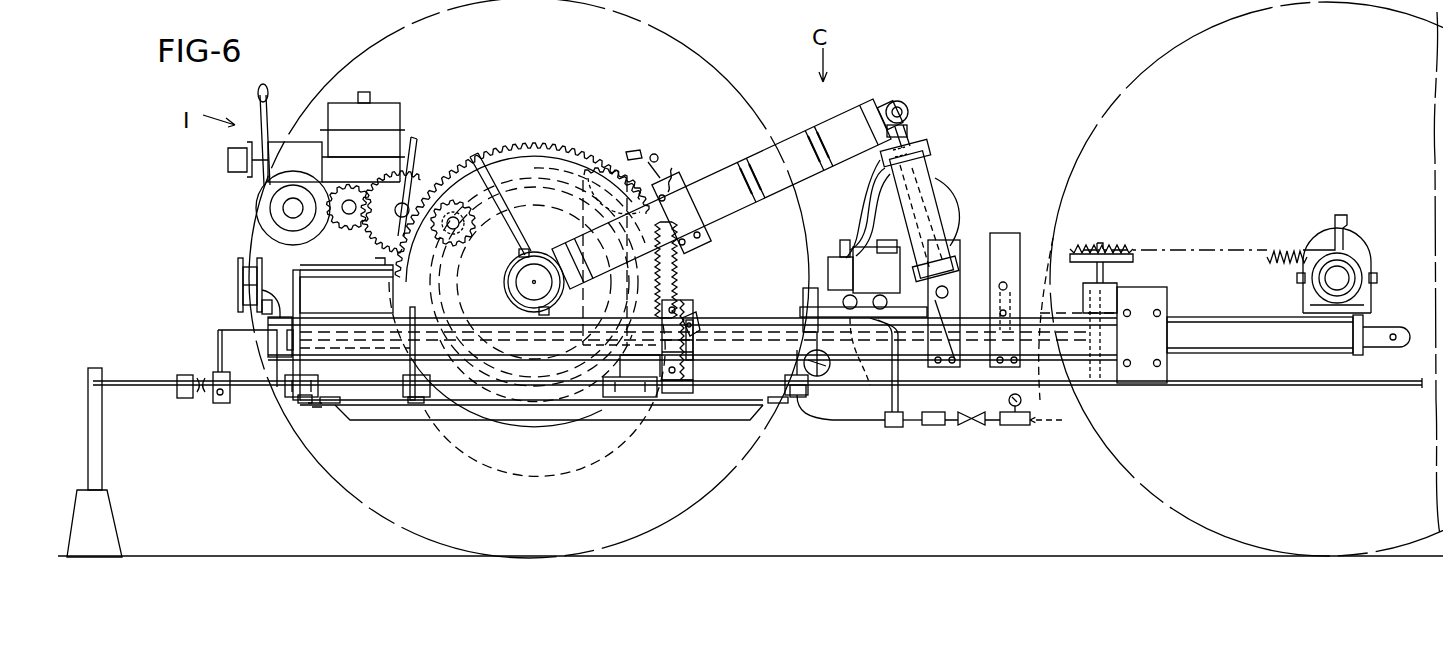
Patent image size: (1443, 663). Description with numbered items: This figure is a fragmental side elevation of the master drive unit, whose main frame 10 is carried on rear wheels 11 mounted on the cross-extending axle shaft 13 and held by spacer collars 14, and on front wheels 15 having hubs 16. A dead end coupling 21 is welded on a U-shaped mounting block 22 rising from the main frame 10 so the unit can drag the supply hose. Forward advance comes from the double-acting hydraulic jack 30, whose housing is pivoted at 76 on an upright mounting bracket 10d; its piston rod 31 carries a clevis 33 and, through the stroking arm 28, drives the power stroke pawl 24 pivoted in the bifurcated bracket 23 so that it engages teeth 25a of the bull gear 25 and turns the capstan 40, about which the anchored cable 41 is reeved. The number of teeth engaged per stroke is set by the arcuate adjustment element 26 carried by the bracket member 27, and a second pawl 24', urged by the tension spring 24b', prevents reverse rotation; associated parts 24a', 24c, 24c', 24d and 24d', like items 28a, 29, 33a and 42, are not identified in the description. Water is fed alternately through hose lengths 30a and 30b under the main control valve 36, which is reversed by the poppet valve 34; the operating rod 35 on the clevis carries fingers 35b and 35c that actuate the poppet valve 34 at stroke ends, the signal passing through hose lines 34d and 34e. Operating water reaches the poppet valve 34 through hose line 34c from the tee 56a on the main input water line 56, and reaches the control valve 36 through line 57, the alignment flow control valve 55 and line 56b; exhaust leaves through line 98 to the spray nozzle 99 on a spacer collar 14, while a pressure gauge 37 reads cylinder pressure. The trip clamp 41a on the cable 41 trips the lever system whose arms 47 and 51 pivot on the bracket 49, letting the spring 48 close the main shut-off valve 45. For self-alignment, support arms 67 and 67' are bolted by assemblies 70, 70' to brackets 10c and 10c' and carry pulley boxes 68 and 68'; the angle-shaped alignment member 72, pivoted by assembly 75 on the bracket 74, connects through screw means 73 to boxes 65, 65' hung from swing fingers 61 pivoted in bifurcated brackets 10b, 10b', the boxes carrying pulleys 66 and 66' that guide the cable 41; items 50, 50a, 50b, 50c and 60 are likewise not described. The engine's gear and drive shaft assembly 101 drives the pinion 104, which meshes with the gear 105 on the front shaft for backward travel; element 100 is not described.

The main frame 10 is at (1193, 325).
The bifurcated bracket 10b is at (836, 291).
The bifurcated bracket 10b' is at (343, 329).
The bracket 10c is at (661, 294).
The bracket 10c' is at (380, 341).
The upright mounting bracket 10d is at (934, 388).
The rear wheels 11 is at (1176, 52).
The axle shaft 13 is at (1354, 262).
The spacer collars 14 is at (1377, 276).
The front wheels 15 is at (680, 26).
The hubs 16 is at (534, 268).
The dead end coupling 21 is at (238, 272).
The U-shaped mounting block 22 is at (262, 296).
The bifurcated bracket 23 is at (693, 180).
The power stroke pawl 24 is at (665, 135).
The second pawl 24' is at (701, 345).
The bracket 24a' is at (664, 374).
The tension spring 24b' is at (697, 414).
The pawl 24c is at (630, 126).
The rack 24c' is at (711, 323).
The spring 24d is at (688, 155).
The plate 24d' is at (717, 351).
The bull gear 25 is at (480, 138).
The teeth 25a is at (560, 148).
The adjustment element 26 is at (606, 162).
The bracket member 27 is at (575, 180).
The stroking arm 28 is at (800, 145).
The clevis 28a is at (885, 100).
The hub flange 29 is at (510, 272).
The hydraulic jack 30 is at (935, 196).
The hose length 30a is at (870, 200).
The hose length 30b is at (828, 272).
The piston rod 31 is at (920, 138).
The clevis 33 is at (912, 110).
The pivot pin 33a is at (902, 100).
The poppet valve 34 is at (935, 153).
The hose line 34c is at (955, 224).
The hose line 34d is at (873, 212).
The hose line 34e is at (866, 230).
The operating rod 35 is at (962, 204).
The finger 35b is at (935, 148).
The lower operating finger 35c is at (958, 246).
The main control valve 36 is at (832, 258).
The pressure gauge 37 is at (950, 282).
The capstan 40 is at (497, 140).
The cable 41 is at (140, 388).
The trip clamp 41a is at (182, 376).
The post 42 is at (103, 458).
The main shut-off valve 45 is at (1108, 283).
The latching arm 47 is at (1062, 240).
The spring 48 is at (1270, 254).
The mounting bracket 49 is at (1056, 226).
The bracket 50 is at (232, 326).
The bracket arm 50a is at (218, 370).
The joint 50b is at (218, 403).
The band 50c is at (492, 420).
The operating arm 51 is at (1023, 300).
The alignment flow control valve 55 is at (805, 360).
The main input water line 56 is at (1058, 425).
The tee 56a is at (894, 428).
The line 56b is at (862, 424).
The line 57 is at (842, 370).
The hose 60 is at (806, 403).
The swing finger 61 is at (803, 320).
The pulley mounting box 65 is at (779, 372).
The pulley mounting box 65' is at (288, 434).
The pulley 66 is at (788, 416).
The pulley 66' is at (324, 377).
The support arm 67 is at (626, 365).
The support arm 67' is at (400, 377).
The pulley box 68 is at (626, 412).
The pulley box 68' is at (426, 422).
The bolt and nut assembly 70 is at (657, 270).
The bolt and nut assembly 70' is at (355, 345).
The alignment arm member 72 is at (590, 410).
The screw and nut means 73 is at (330, 403).
The bracket 74 is at (518, 405).
The pivot assembly 75 is at (548, 405).
The pivot 76 is at (948, 365).
The line 98 is at (1243, 316).
The spray nozzle 99 is at (1338, 213).
The motor 100 is at (340, 230).
The gear and drive shaft assembly 101 is at (412, 134).
The pinion 104 is at (468, 220).
The gear 105 is at (456, 158).